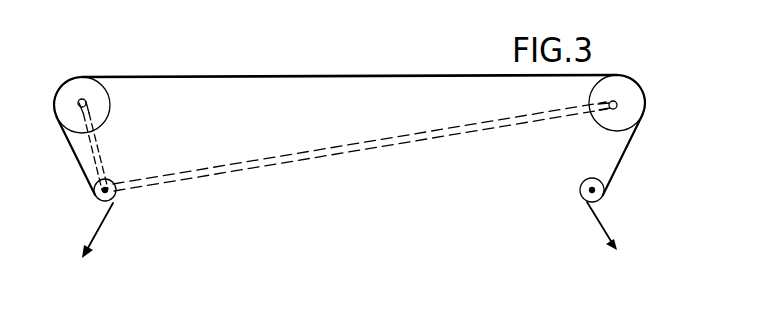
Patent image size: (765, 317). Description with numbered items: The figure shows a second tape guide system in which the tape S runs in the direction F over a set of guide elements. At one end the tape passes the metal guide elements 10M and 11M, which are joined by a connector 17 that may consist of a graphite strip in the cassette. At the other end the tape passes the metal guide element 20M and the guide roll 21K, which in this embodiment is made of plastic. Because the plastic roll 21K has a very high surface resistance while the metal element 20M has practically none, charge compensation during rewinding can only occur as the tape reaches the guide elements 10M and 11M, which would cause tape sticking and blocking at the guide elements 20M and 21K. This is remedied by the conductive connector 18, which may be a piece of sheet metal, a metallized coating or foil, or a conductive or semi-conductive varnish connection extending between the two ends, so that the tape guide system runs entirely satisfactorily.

The sheet / web S is at (203, 76).
The conveying direction F is at (268, 78).
The guide element 10M is at (104, 104).
The guide element 11M is at (95, 190).
The connector 17 is at (96, 146).
The conductive connector 18 is at (378, 143).
The guide element 20M is at (601, 121).
The guide roll 21K is at (604, 190).